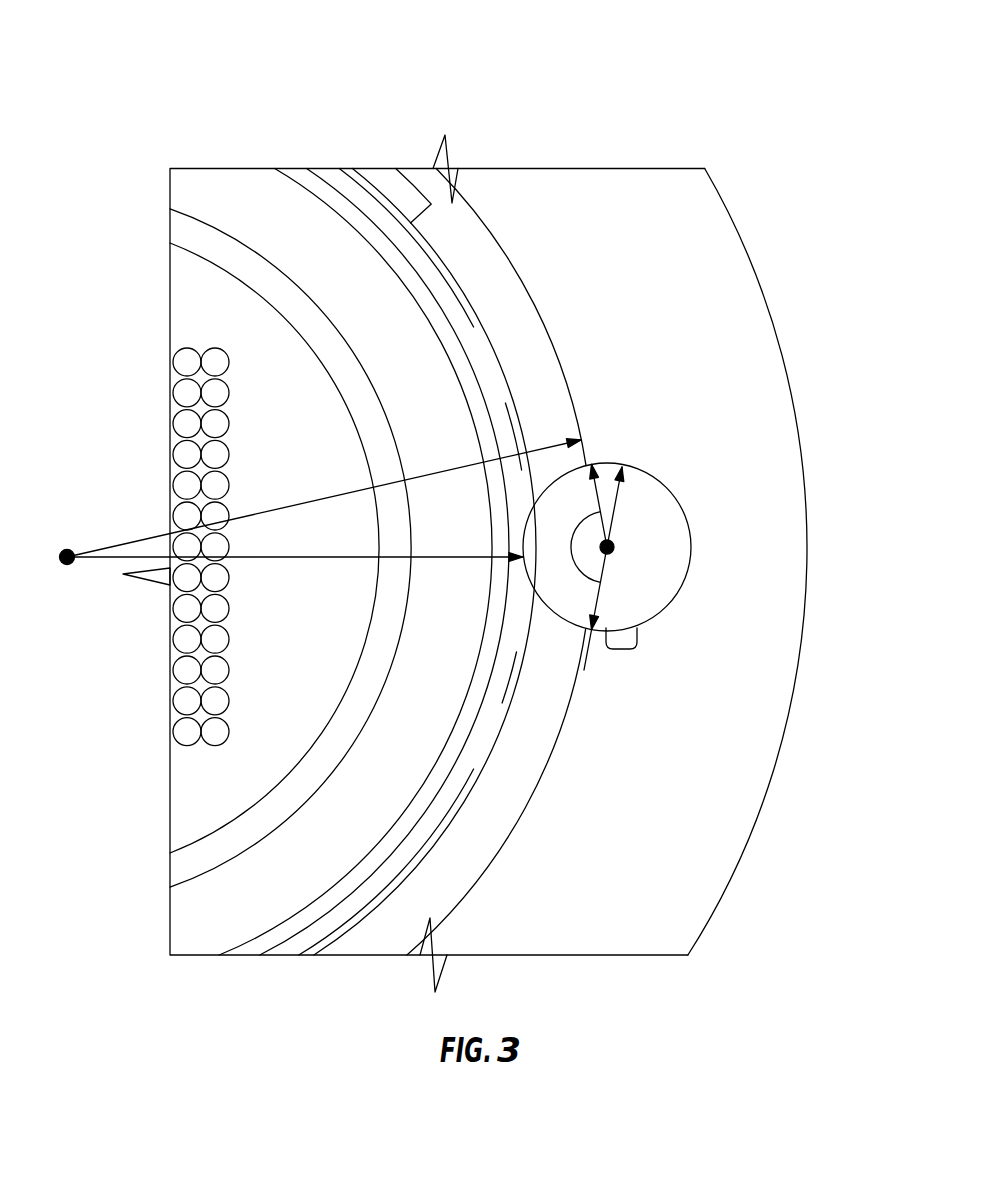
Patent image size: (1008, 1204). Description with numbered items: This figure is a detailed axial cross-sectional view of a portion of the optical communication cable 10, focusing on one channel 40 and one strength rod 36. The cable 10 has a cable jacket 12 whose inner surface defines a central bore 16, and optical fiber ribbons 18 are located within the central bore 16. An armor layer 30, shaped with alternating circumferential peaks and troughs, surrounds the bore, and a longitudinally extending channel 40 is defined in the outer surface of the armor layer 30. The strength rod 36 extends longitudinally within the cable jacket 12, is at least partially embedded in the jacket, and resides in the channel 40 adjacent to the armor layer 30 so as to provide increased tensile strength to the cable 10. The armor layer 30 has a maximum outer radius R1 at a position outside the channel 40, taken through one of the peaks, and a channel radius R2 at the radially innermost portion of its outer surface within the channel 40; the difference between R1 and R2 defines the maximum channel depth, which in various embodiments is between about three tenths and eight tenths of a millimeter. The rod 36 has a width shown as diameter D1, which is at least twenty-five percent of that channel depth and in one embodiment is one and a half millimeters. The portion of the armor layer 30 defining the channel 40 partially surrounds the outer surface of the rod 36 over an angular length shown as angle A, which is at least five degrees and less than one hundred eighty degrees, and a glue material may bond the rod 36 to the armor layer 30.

The cable 10 is at (770, 117).
The cable jacket 12 is at (703, 238).
The central bore 16 is at (137, 265).
The optical fiber ribbons 18 is at (178, 347).
The armor layer 30 is at (467, 895).
The strength rods 36 is at (682, 590).
The channel 40 is at (565, 630).
The diameter D1 is at (617, 513).
The angle A is at (571, 548).
The maximum outer radius R1 is at (329, 496).
The channel radius R2 is at (330, 560).